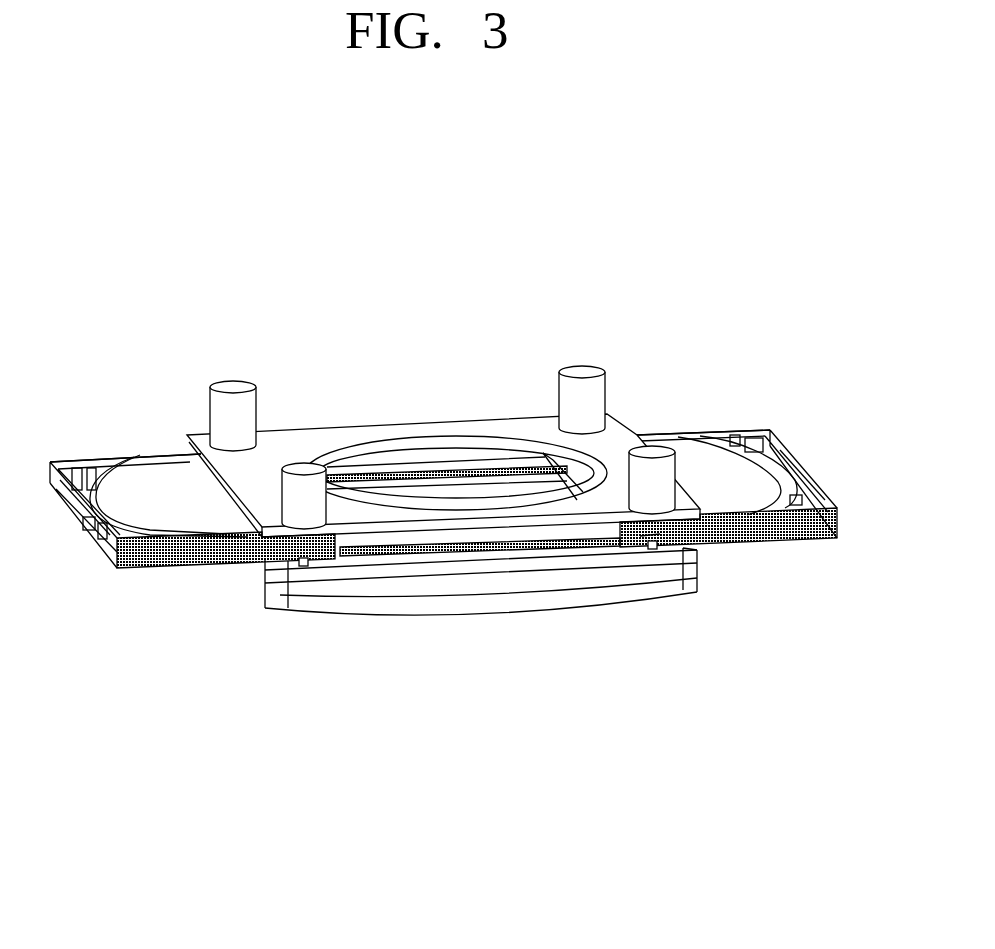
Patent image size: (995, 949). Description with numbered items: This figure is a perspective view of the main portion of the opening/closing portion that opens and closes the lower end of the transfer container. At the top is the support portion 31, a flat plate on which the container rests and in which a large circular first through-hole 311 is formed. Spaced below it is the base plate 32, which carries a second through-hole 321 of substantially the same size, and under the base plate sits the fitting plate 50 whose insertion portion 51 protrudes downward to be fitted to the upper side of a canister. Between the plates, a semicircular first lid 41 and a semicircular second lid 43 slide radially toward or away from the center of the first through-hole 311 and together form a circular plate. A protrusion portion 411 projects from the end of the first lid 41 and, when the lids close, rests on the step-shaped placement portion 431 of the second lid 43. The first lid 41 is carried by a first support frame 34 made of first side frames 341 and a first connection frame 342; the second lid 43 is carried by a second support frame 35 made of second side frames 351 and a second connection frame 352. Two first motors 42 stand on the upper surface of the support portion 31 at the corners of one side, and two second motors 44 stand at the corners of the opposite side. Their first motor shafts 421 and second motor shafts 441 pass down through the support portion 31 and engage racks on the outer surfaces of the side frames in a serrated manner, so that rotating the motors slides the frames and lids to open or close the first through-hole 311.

The support portion 31 is at (527, 425).
The first through-hole 311 is at (417, 440).
The base plate 32 is at (378, 565).
The second through-hole 321 is at (550, 545).
The first support frame 34 is at (110, 808).
The first side frames 341 is at (90, 463).
The first connection frame 342 is at (83, 495).
The second support frame 35 is at (288, 808).
The second side frames 351 is at (737, 428).
The second connection frame 352 is at (813, 485).
The first lid 41 is at (158, 480).
The protrusion portion 411 is at (340, 556).
The first motors 42 is at (237, 397).
The first motor shafts 421 is at (288, 563).
The second lid 43 is at (757, 472).
The placement portion 431 is at (650, 548).
The second motors 44 is at (582, 387).
The second motor shafts 441 is at (648, 535).
The fitting plate 50 is at (523, 590).
The insertion portion 51 is at (472, 617).